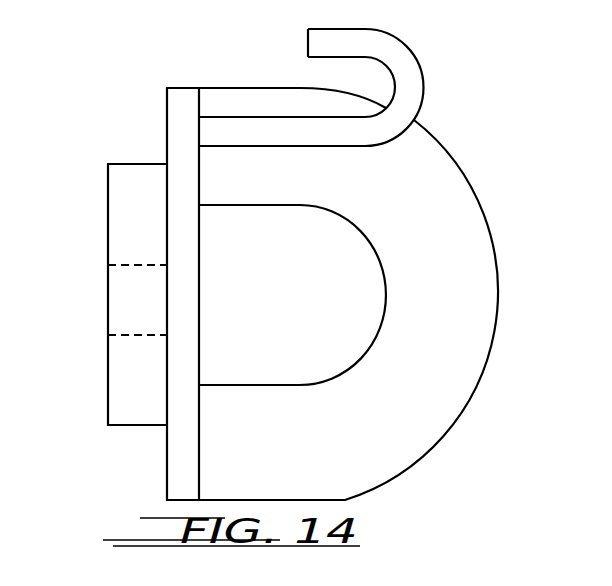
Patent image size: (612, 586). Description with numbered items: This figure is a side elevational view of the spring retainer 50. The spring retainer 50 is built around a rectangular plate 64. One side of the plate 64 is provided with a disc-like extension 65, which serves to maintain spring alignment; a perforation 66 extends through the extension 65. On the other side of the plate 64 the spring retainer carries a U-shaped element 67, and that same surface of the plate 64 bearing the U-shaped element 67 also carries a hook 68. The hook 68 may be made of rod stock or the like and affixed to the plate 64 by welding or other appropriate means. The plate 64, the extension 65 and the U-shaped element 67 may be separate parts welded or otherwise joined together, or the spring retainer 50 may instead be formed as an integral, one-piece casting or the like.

The spring retainer 50 is at (172, 102).
The rectangular plate 64 is at (178, 128).
The disc-like extension 65 is at (118, 188).
The perforation 66 is at (130, 335).
The U-shaped element 67 is at (488, 279).
The hook 68 is at (348, 36).